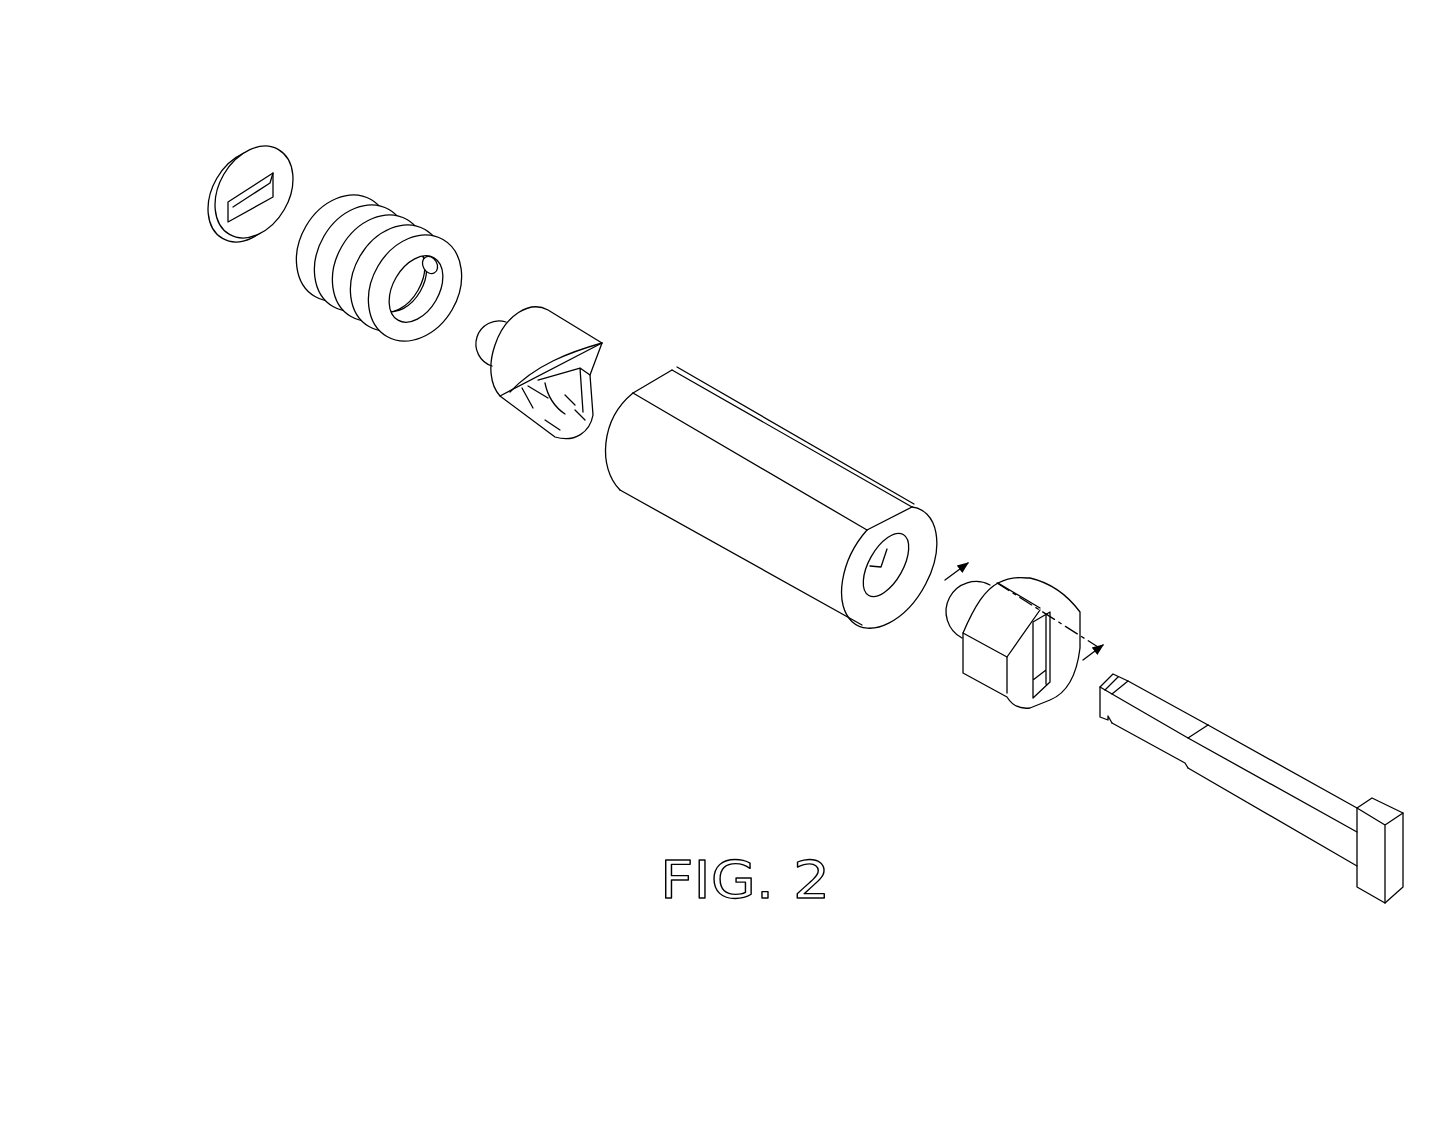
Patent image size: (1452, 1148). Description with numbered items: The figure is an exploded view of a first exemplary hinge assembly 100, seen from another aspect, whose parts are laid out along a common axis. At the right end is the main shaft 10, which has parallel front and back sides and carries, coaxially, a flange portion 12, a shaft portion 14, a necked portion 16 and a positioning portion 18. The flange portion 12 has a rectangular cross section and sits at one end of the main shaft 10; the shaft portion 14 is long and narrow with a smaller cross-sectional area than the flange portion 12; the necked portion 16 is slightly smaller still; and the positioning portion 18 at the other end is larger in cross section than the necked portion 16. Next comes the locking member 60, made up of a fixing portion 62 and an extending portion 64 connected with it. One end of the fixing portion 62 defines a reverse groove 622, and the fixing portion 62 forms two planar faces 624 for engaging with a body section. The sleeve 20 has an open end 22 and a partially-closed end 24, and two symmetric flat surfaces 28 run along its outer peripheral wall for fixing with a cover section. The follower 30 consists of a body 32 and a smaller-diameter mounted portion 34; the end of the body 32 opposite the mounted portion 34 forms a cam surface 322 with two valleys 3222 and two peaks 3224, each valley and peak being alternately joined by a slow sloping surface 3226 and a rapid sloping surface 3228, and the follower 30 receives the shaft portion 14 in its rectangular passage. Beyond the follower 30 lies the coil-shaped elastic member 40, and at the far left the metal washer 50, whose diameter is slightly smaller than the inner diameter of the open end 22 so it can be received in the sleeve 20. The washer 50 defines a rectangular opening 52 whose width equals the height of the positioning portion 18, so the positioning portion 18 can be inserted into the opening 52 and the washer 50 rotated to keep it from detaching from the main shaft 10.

The hinge assembly 100 is at (970, 182).
The main shaft 10 is at (1334, 767).
The flange portion 12 is at (1373, 807).
The shaft portion 14 is at (1245, 755).
The necked portion 16 is at (1152, 708).
The positioning portion 18 is at (1113, 683).
The sleeve 20 is at (827, 430).
The open end 22 is at (653, 372).
The partially-closed end 24 is at (912, 518).
The flat surfaces 28 is at (715, 413).
The follower 30 is at (610, 317).
The body 32 is at (542, 330).
The mounted portion 34 is at (497, 320).
The cam surface 322 is at (380, 430).
The valleys 3222 is at (543, 412).
The peaks 3224 is at (580, 418).
The slow sloping surface 3226 is at (570, 402).
The rapid sloping surface 3228 is at (552, 430).
The elastic member 40 is at (386, 226).
The washer 50 is at (258, 142).
The opening 52 is at (247, 196).
The locking member 60 is at (1092, 592).
The fixing portion 62 is at (1032, 593).
The reverse groove 622 is at (1040, 667).
The planar faces 624 is at (985, 673).
The extending portion 64 is at (957, 640).